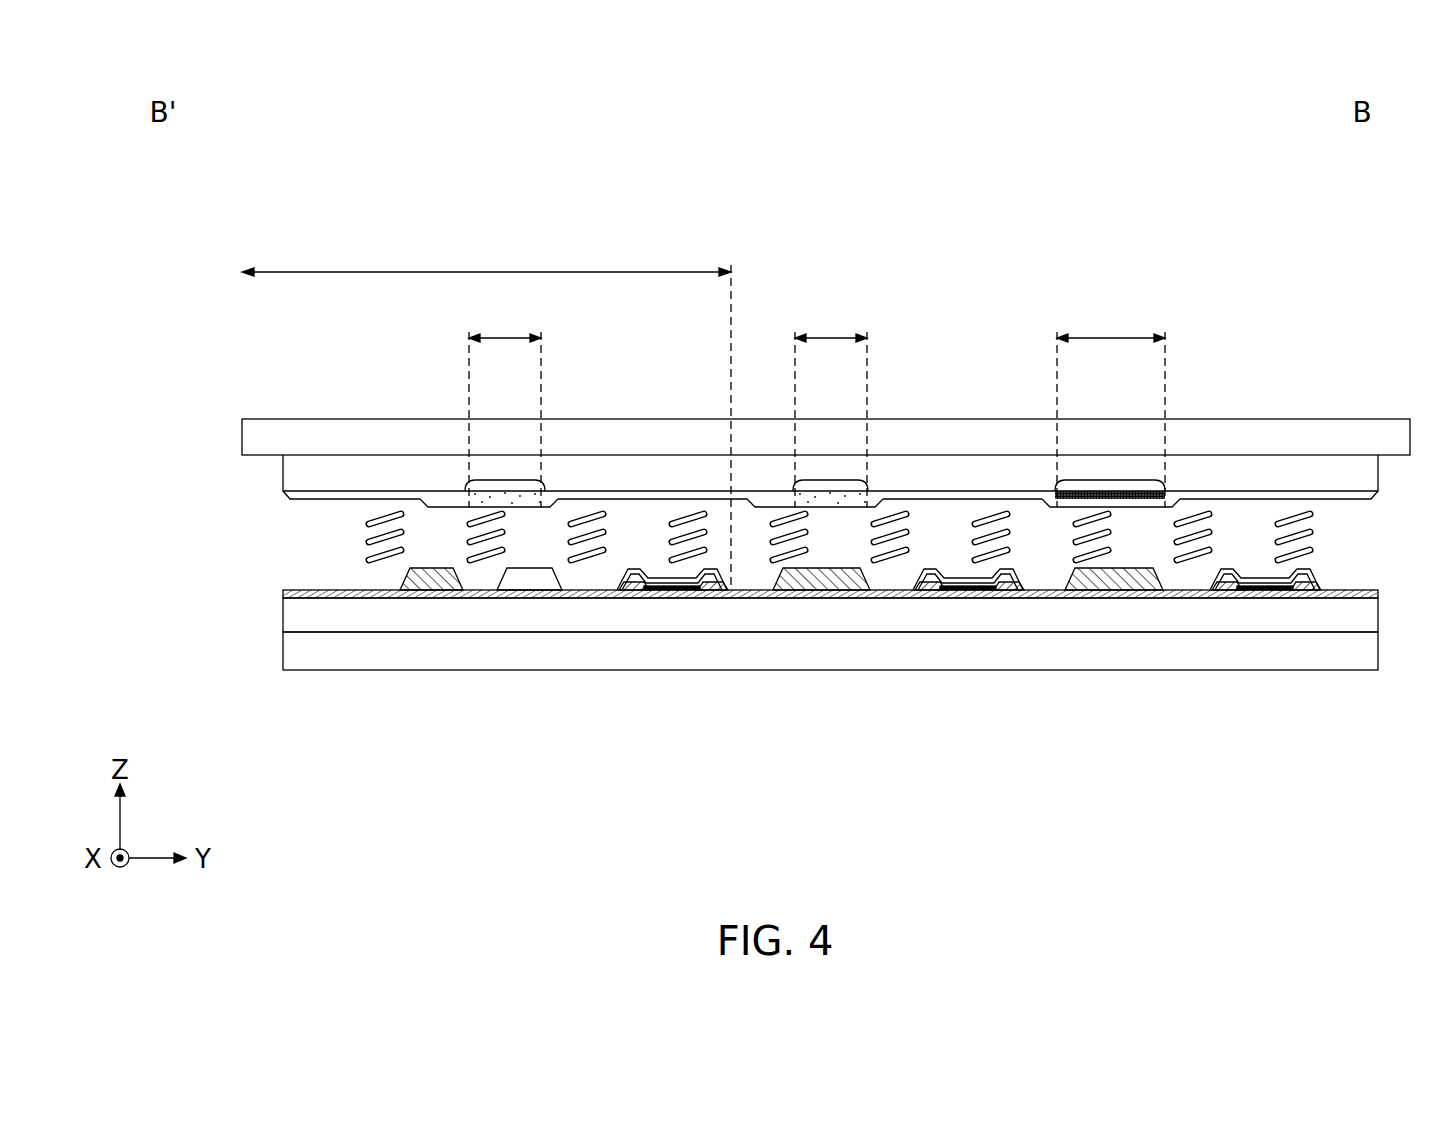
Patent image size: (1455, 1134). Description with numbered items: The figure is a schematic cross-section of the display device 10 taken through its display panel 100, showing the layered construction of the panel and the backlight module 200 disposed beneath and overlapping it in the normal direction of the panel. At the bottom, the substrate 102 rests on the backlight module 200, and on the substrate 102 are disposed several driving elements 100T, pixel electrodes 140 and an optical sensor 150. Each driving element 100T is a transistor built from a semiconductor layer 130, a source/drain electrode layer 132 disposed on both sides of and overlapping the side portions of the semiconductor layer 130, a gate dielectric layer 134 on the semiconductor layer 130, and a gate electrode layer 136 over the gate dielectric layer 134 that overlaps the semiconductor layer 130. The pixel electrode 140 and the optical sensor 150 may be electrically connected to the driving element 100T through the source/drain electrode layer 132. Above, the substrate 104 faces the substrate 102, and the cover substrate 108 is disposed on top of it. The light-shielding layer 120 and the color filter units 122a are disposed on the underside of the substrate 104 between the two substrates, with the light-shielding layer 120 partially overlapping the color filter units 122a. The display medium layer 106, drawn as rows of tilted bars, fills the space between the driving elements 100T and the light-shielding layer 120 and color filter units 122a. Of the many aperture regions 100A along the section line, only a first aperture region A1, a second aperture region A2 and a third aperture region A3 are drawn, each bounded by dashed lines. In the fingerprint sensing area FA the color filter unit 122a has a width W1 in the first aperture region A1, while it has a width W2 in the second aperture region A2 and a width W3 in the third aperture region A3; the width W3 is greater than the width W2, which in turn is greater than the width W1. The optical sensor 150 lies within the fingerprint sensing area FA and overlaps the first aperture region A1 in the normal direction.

The display device 10 is at (217, 238).
The display panel 100 is at (160, 417).
The aperture regions 100A is at (1256, 142).
The driving element 100T is at (942, 734).
The substrate 102 is at (283, 614).
The substrate 104 is at (283, 471).
The display medium layer 106 is at (1328, 546).
The cover substrate 108 is at (243, 437).
The light-shielding layer 120 is at (1372, 493).
The color filter unit 122a is at (478, 499).
The semiconductor layer 130 is at (668, 590).
The source/drain electrode layer 132 is at (595, 600).
The gate dielectric layer 134 is at (657, 592).
The gate electrode layer 136 is at (690, 588).
The pixel electrode 140 is at (437, 600).
The optical sensor 150 is at (530, 600).
The backlight module 200 is at (283, 655).
The first aperture region A1 is at (492, 493).
The second aperture region A2 is at (815, 493).
The third aperture region A3 is at (1108, 493).
The width W1 is at (505, 398).
The width W2 is at (831, 398).
The width W3 is at (1111, 398).
The fingerprint sensing area FA is at (486, 414).